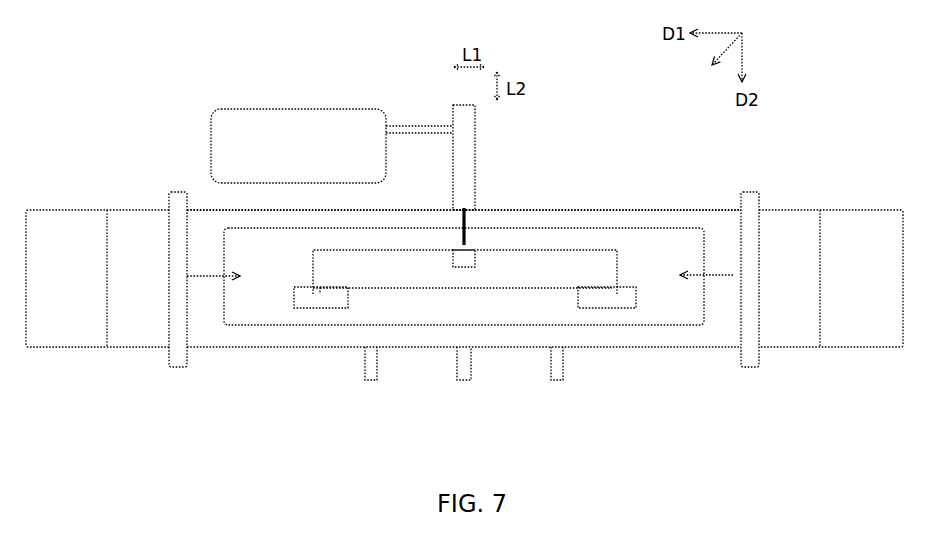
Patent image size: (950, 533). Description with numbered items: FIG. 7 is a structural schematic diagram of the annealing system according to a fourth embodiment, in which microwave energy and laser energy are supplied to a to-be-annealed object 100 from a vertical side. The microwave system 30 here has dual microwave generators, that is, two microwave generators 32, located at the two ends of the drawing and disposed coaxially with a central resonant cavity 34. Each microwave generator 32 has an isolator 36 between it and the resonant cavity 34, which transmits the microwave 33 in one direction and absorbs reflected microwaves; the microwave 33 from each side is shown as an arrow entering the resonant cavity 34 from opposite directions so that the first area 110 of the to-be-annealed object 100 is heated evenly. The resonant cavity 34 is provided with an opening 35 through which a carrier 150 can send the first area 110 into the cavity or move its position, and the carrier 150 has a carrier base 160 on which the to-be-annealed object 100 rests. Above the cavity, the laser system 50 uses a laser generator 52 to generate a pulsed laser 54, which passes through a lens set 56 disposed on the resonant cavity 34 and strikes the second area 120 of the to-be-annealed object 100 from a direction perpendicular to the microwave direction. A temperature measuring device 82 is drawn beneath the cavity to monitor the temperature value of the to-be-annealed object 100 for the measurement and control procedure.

The microwave system 30 is at (838, 162).
The microwave generator 32 is at (68, 225).
The microwave 33 is at (220, 273).
The resonant cavity 34 is at (691, 215).
The opening 35 is at (585, 226).
The isolator 36 is at (149, 220).
The laser system 50 is at (307, 92).
The laser generator 52 is at (242, 128).
The laser 54 is at (467, 212).
The lens set 56 is at (468, 133).
The temperature measuring device 82 is at (557, 358).
The to-be-annealed object 100 is at (618, 258).
The first area 110 is at (387, 280).
The second area 120 is at (468, 248).
The carrier 150 is at (298, 300).
The carrier base 160 is at (315, 290).